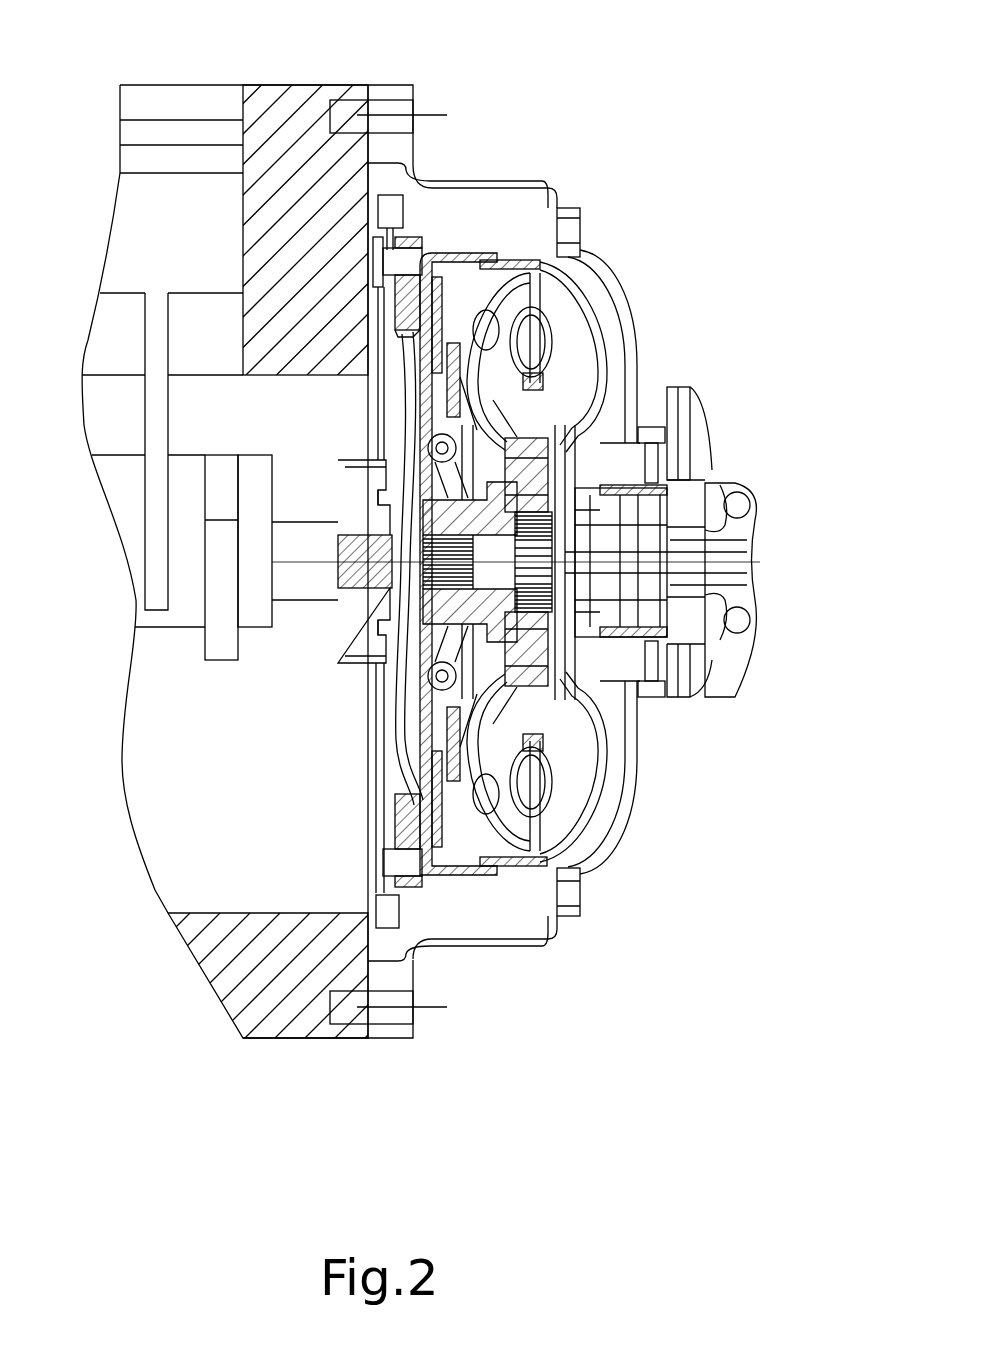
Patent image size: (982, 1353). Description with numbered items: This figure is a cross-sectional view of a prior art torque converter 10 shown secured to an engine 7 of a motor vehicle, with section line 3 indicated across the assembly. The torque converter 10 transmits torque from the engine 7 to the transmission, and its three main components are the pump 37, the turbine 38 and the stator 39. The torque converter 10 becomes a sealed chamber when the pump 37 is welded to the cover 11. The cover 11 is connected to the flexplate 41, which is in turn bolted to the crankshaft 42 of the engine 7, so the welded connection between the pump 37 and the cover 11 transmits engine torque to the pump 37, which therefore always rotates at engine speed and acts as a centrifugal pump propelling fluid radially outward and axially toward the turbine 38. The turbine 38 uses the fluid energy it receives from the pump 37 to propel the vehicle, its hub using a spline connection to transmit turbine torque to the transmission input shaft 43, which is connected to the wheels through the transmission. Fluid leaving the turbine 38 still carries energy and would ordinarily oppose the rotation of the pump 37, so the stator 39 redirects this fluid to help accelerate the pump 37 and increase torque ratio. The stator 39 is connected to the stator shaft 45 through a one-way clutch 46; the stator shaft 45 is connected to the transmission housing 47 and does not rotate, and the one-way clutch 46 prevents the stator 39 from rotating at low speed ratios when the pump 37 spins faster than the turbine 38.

The section line 3- 3 is at (392, 890).
The engine 7 is at (382, 948).
The torque converter 10 is at (602, 298).
The cover 11 is at (390, 405).
The pump 37 is at (606, 822).
The turbine 38 is at (470, 820).
The stator 39 is at (490, 735).
The flexplate 41 is at (378, 712).
The crankshaft 42 is at (323, 623).
The transmission input shaft 43 is at (694, 580).
The stator shaft 45 is at (688, 502).
The one-way clutch 46 is at (584, 674).
The transmission housing 47 is at (690, 440).